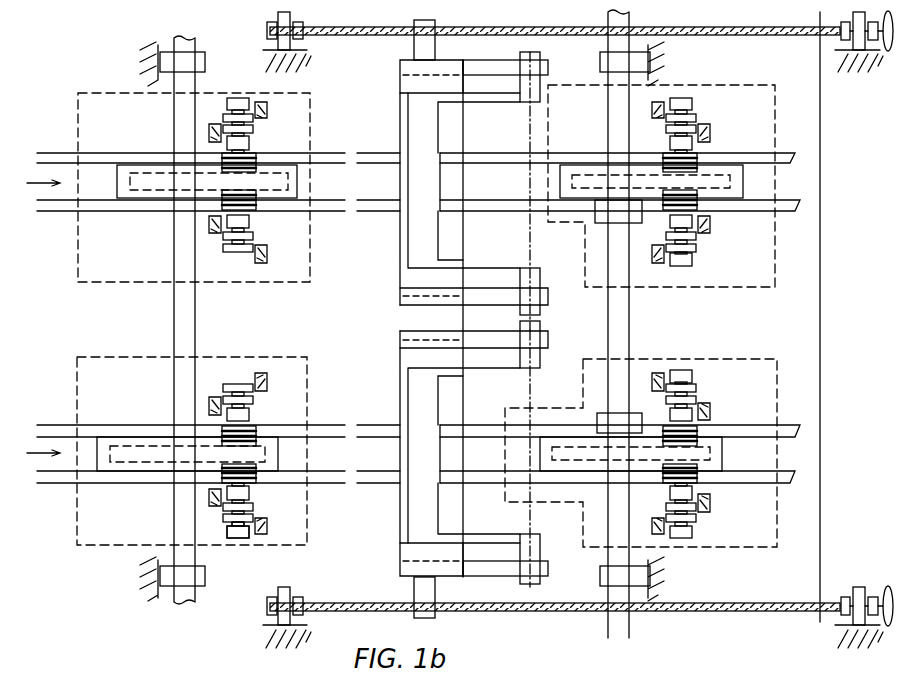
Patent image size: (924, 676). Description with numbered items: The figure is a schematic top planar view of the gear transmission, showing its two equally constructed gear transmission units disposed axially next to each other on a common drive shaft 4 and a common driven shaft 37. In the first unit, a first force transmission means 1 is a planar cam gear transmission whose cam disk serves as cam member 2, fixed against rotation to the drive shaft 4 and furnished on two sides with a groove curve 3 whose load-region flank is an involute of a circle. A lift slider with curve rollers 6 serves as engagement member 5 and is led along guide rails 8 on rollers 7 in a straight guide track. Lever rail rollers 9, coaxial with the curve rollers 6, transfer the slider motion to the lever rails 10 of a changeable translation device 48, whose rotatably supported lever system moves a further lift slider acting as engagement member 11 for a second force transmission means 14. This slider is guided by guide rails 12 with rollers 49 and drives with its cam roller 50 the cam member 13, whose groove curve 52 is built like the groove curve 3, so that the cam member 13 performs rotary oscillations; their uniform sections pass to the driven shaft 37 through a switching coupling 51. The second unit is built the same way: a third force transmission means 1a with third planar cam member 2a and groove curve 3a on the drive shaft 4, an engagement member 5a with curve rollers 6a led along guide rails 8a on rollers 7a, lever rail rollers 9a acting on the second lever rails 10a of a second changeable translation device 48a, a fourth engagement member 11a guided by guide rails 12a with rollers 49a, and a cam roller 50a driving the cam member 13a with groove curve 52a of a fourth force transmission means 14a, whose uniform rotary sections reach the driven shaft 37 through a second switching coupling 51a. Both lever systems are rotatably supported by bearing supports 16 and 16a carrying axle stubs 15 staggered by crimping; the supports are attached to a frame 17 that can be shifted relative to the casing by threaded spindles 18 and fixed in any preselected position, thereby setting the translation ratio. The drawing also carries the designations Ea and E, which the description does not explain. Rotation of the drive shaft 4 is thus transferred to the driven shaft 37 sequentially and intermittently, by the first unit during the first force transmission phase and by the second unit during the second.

The third force transmission means 1a is at (95, 257).
The first force transmission means 1 is at (90, 378).
The third planar cam member 2a is at (298, 184).
The cam member 2 is at (300, 455).
The groove curve 3a is at (145, 172).
The groove curve 3 is at (140, 440).
The drive shaft 4 is at (180, 303).
The engagement member 5a is at (238, 98).
The engagement member 5 is at (240, 528).
The curve rollers 6a is at (245, 170).
The curve rollers 6 is at (248, 445).
The rollers 7a is at (256, 248).
The rollers 7 is at (256, 512).
The guide rails 8a is at (215, 235).
The guide rails 8 is at (260, 372).
The lever rail rollers 9a is at (245, 160).
The lever rail rollers 9 is at (250, 432).
The second lever rails 10a is at (500, 205).
The lever rails 10 is at (474, 432).
The fourth engagement member 11a is at (680, 103).
The engagement member 11 is at (680, 375).
The guide rails 12a is at (706, 240).
The guide rails 12 is at (705, 505).
The cam member 13a is at (740, 185).
The cam member 13 is at (720, 455).
The fourth force transmission means 14a is at (760, 278).
The second force transmission means 14 is at (768, 394).
The axle stubs 15 is at (527, 85).
The bearing supports 16a is at (497, 68).
The bearing supports 16 is at (497, 340).
The frame 17 is at (420, 572).
The threaded spindles 18 is at (762, 604).
The driven shaft 37 is at (618, 323).
The second changeable translation device 48a is at (395, 133).
The changeable translation device 48 is at (390, 498).
The rollers 49a is at (690, 122).
The rollers 49 is at (690, 400).
The cam roller 50a is at (690, 158).
The cam roller 50 is at (690, 440).
The second switching coupling 51a is at (598, 222).
The switching coupling 51 is at (600, 413).
The groove curve 52a is at (600, 170).
The groove curve 52 is at (575, 440).
The axis of displacement Ea is at (521, 191).
The axis of displacement E is at (523, 458).